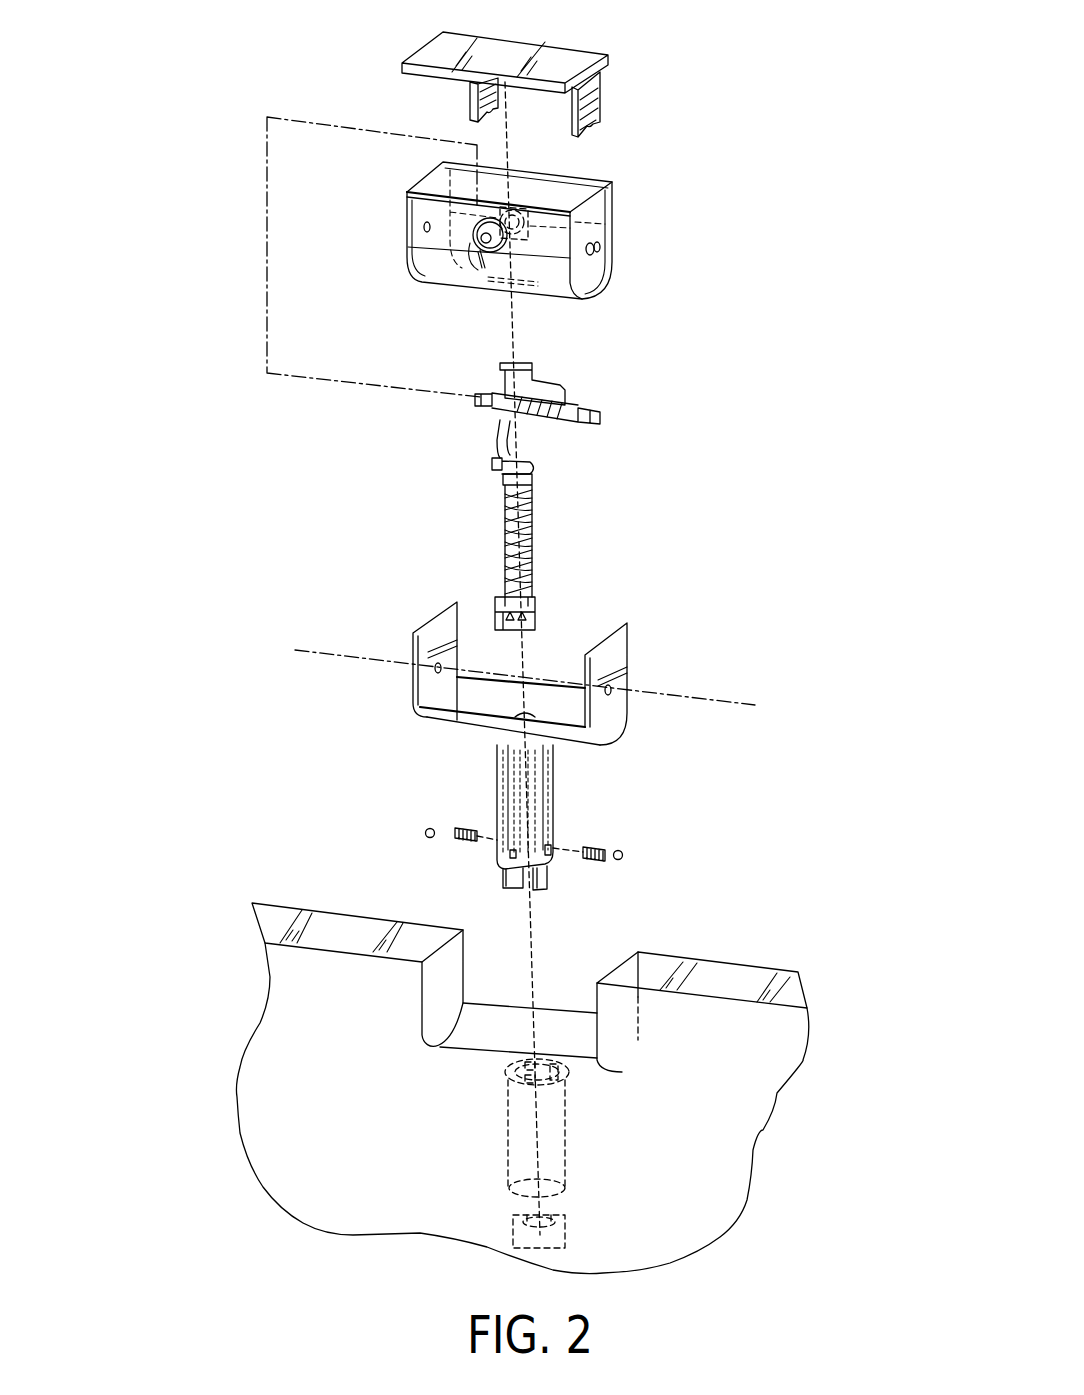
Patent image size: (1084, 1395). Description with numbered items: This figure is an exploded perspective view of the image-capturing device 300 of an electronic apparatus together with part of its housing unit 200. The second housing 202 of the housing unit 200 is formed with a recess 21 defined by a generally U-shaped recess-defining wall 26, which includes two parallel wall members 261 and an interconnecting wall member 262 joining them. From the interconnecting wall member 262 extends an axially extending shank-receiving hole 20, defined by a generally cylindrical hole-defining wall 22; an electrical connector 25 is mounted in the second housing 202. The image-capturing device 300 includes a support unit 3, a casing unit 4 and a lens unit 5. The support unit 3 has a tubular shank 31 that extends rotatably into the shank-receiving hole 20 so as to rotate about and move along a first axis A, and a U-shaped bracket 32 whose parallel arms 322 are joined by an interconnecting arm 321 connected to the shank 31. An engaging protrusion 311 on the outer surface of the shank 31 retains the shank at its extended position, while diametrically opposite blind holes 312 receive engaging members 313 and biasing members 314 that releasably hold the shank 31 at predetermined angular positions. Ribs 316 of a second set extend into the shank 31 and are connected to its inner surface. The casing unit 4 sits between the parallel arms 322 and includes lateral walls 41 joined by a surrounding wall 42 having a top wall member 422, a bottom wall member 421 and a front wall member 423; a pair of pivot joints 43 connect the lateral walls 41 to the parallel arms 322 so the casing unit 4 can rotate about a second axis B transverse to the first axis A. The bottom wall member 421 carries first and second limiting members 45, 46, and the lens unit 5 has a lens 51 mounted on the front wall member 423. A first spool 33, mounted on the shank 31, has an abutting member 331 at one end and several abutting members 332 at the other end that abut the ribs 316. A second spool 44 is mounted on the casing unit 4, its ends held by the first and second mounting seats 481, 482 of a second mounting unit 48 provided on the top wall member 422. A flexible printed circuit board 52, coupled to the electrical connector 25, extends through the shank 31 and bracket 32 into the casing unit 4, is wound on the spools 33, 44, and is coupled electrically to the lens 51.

The housing unit 200 is at (237, 1013).
The second housing 202 is at (713, 977).
The shank-receiving hole 20 is at (505, 1113).
The recess 21 is at (557, 987).
The hole-defining wall 22 is at (565, 1152).
The electrical connector 25 is at (568, 1232).
The recess-defining wall 26 is at (440, 998).
The parallel wall members 261 is at (443, 977).
The interconnecting wall member 262 is at (482, 1025).
The support unit 3 is at (697, 757).
The image-capturing device 300 is at (752, 420).
The shank 31 is at (572, 800).
The engaging protrusion 311 is at (497, 855).
The blind holes 312 is at (548, 862).
The engaging members 313 is at (425, 833).
The biasing members 314 is at (461, 826).
The ribs of second set 316 is at (505, 883).
The bracket 32 is at (652, 618).
The interconnecting arm 321 is at (447, 718).
The parallel arms 322 is at (413, 635).
The first spool 33 is at (520, 523).
The abutting member 331 is at (535, 463).
The abutting members 332 is at (535, 613).
The casing unit 4 is at (718, 180).
The lateral walls 41 is at (440, 200).
The surrounding wall 42 is at (620, 53).
The bottom wall member 421 is at (430, 262).
The top wall member 422 is at (512, 52).
The front wall member 423 is at (430, 237).
The pivot joints 43 is at (407, 217).
The second spool 44 is at (573, 407).
The first limiting member 45 is at (493, 233).
The second limiting member 46 is at (615, 203).
The second mounting unit 48 is at (458, 88).
The first mounting seat 481 is at (463, 107).
The second mounting seat 482 is at (593, 108).
The lens unit 5 is at (533, 190).
The lens 51 is at (480, 197).
The flexible printed circuit board 52 is at (508, 542).
The first axis A is at (530, 980).
The second axis B is at (323, 657).